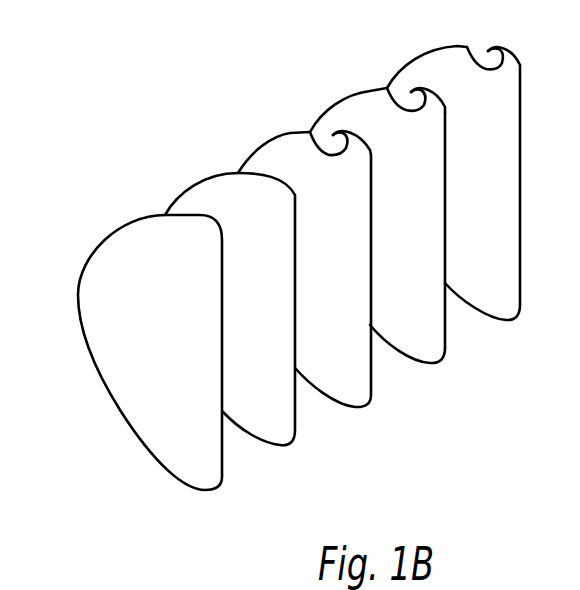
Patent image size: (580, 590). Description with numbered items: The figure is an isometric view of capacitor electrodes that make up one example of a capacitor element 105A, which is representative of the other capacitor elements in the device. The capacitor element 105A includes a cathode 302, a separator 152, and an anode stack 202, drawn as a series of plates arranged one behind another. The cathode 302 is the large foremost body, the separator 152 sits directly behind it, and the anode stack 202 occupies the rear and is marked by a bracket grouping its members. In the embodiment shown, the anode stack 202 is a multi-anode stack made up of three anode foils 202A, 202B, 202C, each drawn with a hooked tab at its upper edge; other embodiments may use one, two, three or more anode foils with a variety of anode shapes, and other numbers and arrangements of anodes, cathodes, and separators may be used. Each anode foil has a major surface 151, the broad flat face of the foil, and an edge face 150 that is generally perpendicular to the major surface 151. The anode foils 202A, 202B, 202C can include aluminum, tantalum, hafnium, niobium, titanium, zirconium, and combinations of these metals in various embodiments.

The capacitor element 105A is at (122, 68).
The cathode 302 is at (78, 317).
The separator 152 is at (275, 447).
The anode stack 202 is at (360, 426).
The anode foil 202A is at (275, 141).
The anode foil 202B is at (390, 213).
The anode foil 202C is at (420, 56).
The edge face 150 is at (447, 239).
The major surface 151 is at (401, 225).